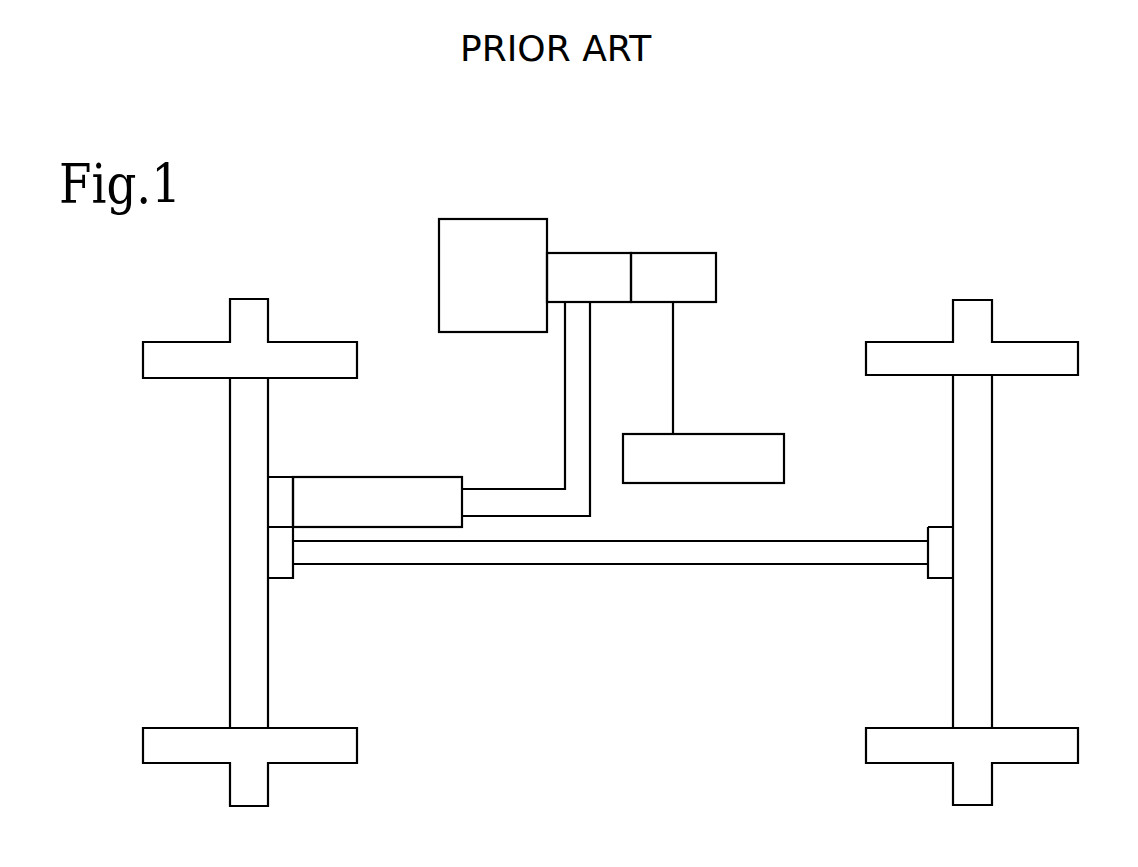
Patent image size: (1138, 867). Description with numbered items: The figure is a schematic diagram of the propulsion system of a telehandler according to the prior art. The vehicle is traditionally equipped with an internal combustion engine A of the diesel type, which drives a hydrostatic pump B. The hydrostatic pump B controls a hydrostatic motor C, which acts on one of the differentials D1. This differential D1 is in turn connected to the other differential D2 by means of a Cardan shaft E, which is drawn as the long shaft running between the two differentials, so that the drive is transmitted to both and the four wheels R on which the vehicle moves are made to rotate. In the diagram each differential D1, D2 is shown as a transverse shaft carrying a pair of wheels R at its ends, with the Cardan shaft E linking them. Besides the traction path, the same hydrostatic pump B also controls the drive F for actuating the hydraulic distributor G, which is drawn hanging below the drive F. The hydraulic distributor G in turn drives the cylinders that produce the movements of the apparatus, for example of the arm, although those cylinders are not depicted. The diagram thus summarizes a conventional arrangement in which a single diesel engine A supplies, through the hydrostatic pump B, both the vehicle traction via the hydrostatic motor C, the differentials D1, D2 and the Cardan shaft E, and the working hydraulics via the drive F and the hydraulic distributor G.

The internal combustion engine A is at (489, 252).
The hydrostatic pump B is at (587, 252).
The hydrostatic motor C is at (358, 477).
The differential D1 is at (230, 453).
The differential D2 is at (992, 440).
The Cardan shaft E is at (558, 566).
The drive F is at (688, 252).
The hydraulic distributor G is at (733, 434).
The wheels R is at (182, 342).